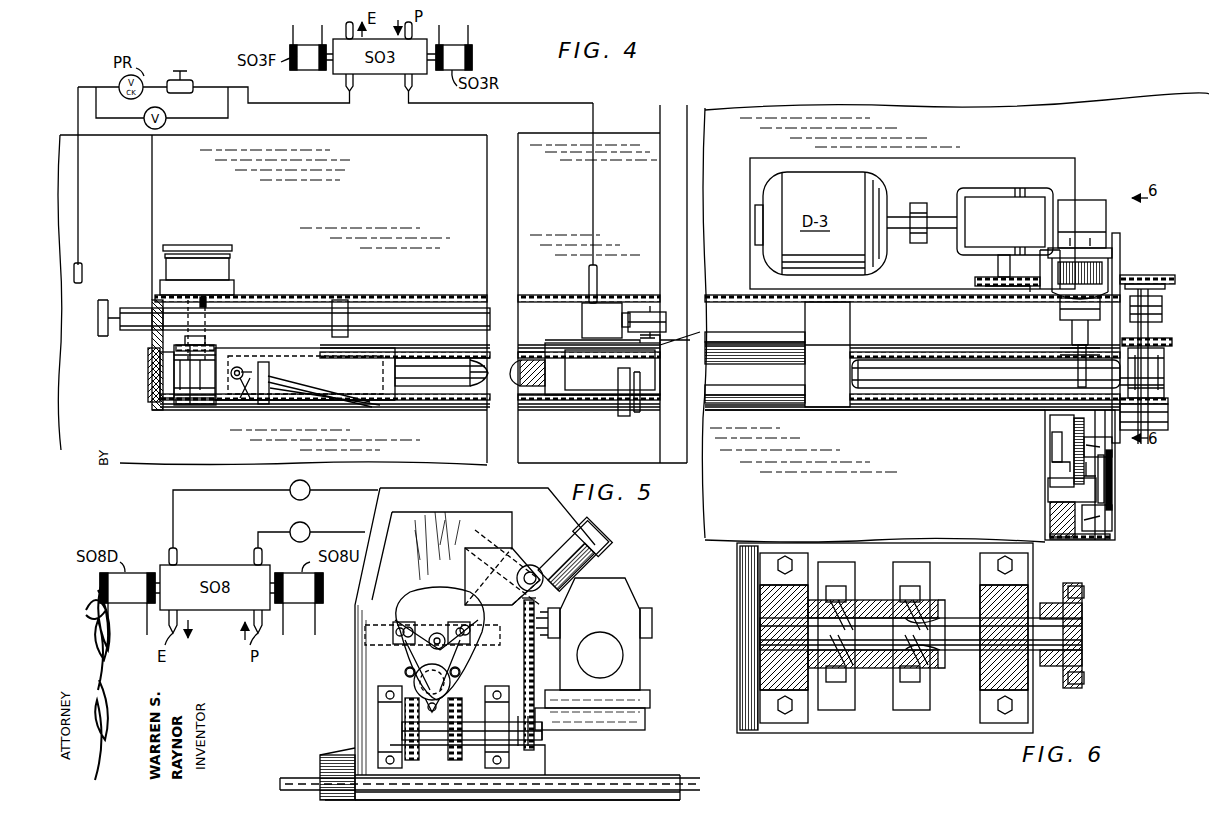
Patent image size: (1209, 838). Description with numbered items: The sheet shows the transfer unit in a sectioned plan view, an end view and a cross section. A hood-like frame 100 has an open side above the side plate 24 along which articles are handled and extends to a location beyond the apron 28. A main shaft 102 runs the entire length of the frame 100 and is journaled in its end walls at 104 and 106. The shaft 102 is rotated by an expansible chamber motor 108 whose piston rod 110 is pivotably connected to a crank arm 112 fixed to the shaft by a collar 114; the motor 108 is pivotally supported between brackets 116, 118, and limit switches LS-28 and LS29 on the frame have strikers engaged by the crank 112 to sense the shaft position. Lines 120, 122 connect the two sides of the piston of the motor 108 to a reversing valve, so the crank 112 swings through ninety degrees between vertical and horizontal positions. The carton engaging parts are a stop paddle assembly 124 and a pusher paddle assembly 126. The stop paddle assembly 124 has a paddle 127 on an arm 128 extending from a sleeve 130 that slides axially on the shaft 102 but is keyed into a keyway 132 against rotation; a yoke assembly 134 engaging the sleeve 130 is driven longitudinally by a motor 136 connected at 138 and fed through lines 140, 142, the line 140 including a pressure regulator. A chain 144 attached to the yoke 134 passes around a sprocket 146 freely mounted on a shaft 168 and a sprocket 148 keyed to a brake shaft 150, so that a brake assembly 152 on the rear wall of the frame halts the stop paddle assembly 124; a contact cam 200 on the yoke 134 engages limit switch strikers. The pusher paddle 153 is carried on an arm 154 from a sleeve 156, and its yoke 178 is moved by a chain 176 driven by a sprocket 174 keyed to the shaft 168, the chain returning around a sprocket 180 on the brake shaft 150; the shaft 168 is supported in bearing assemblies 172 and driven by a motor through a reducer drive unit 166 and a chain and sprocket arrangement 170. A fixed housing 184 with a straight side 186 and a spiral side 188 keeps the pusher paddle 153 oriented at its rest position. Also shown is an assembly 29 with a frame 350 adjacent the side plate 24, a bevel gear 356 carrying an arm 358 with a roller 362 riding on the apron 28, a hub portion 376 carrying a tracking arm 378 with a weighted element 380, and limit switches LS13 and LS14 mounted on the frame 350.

In FIG. 4, the side plate 24 is at (574, 402).
In FIG. 4, the apron 28 is at (890, 482).
In FIG. 5, the apron 28 is at (312, 778).
In FIG. 4, the assembly 29 is at (1120, 467).
In FIG. 4, the hood-like frame 100 is at (320, 292).
In FIG. 5, the hood-like frame 100 is at (470, 518).
In FIG. 6, the hood-like frame 100 is at (736, 570).
In FIG. 4, the main shaft 102 is at (912, 390).
In FIG. 5, the main shaft 102 is at (448, 688).
In FIG. 4, the journal 104 is at (147, 388).
In FIG. 4, the journal 106 is at (1150, 368).
In FIG. 5, the journal 106 is at (405, 682).
In FIG. 4, the expansible chamber motor 108 is at (1100, 220).
In FIG. 5, the expansible chamber motor 108 is at (585, 520).
In FIG. 5, the piston rod 110 is at (445, 620).
In FIG. 4, the crank arm 112 is at (1072, 362).
In FIG. 5, the crank arm 112 is at (435, 633).
In FIG. 4, the collar 114 is at (1158, 386).
In FIG. 4, the bracket 116 is at (1023, 290).
In FIG. 4, the bracket 118 is at (1120, 262).
In FIG. 5, the bracket 118 is at (495, 555).
In FIG. 5, the line 120 is at (376, 490).
In FIG. 5, the line 122 is at (363, 532).
In FIG. 4, the stop paddle assembly 124 is at (590, 420).
In FIG. 4, the pusher paddle assembly 126 is at (271, 415).
In FIG. 4, the paddle 127 is at (624, 416).
In FIG. 4, the arm 128 is at (640, 406).
In FIG. 4, the sleeve 130 is at (600, 375).
In FIG. 4, the keyway 132 is at (524, 364).
In FIG. 4, the yoke assembly 134 is at (623, 348).
In FIG. 4, the expansible chamber motor 136 is at (305, 355).
In FIG. 4, the connection 138 is at (639, 307).
In FIG. 4, the line 140 is at (80, 192).
In FIG. 4, the line 142 is at (593, 198).
In FIG. 4, the chain 144 is at (745, 398).
In FIG. 5, the chain 144 is at (415, 752).
In FIG. 6, the chain 144 is at (835, 584).
In FIG. 4, the sprocket 146 is at (1158, 408).
In FIG. 6, the sprocket 146 is at (838, 608).
In FIG. 4, the sprocket 148 is at (185, 398).
In FIG. 4, the brake shaft 150 is at (205, 306).
In FIG. 4, the brake assembly 152 is at (210, 250).
In FIG. 4, the pusher paddle 153 is at (263, 406).
In FIG. 4, the arm 154 is at (245, 380).
In FIG. 4, the sleeve 156 is at (306, 386).
In FIG. 4, the reducer drive unit 166 is at (1018, 226).
In FIG. 5, the reducer drive unit 166 is at (600, 584).
In FIG. 4, the shaft 168 is at (1150, 323).
In FIG. 5, the shaft 168 is at (445, 748).
In FIG. 6, the shaft 168 is at (921, 634).
In FIG. 4, the chain and sprocket arrangement 170 is at (1150, 275).
In FIG. 5, the chain and sprocket arrangement 170 is at (536, 680).
In FIG. 6, the chain and sprocket arrangement 170 is at (1070, 584).
In FIG. 4, the bearing assemblies 172 is at (1162, 305).
In FIG. 5, the bearing assemblies 172 is at (400, 725).
In FIG. 6, the bearing assemblies 172 is at (760, 620).
In FIG. 4, the sprocket 174 is at (1170, 343).
In FIG. 6, the sprocket 174 is at (940, 658).
In FIG. 4, the chain 176 is at (874, 352).
In FIG. 5, the chain 176 is at (455, 750).
In FIG. 6, the chain 176 is at (915, 685).
In FIG. 4, the yoke 178 is at (385, 378).
In FIG. 4, the sprocket 180 is at (180, 360).
In FIG. 4, the fixed housing 184 is at (295, 402).
In FIG. 4, the straight side 186 is at (460, 378).
In FIG. 4, the spiral side 188 is at (362, 404).
In FIG. 4, the contact cam 200 is at (704, 329).
In FIG. 4, the frame 350 is at (1112, 504).
In FIG. 4, the bevel gear 356 is at (1060, 421).
In FIG. 4, the arm 358 is at (1058, 448).
In FIG. 4, the roller 362 is at (1055, 470).
In FIG. 4, the hub portion 376 is at (1104, 484).
In FIG. 4, the tracking arm 378 is at (1052, 504).
In FIG. 4, the weighted element 380 is at (1048, 487).
In FIG. 4, the limit switch LS13 is at (1112, 448).
In FIG. 4, the limit switch LS14 is at (1100, 520).
In FIG. 5, the limit switch LS-28 is at (395, 622).
In FIG. 5, the limit switch LS29 is at (468, 640).